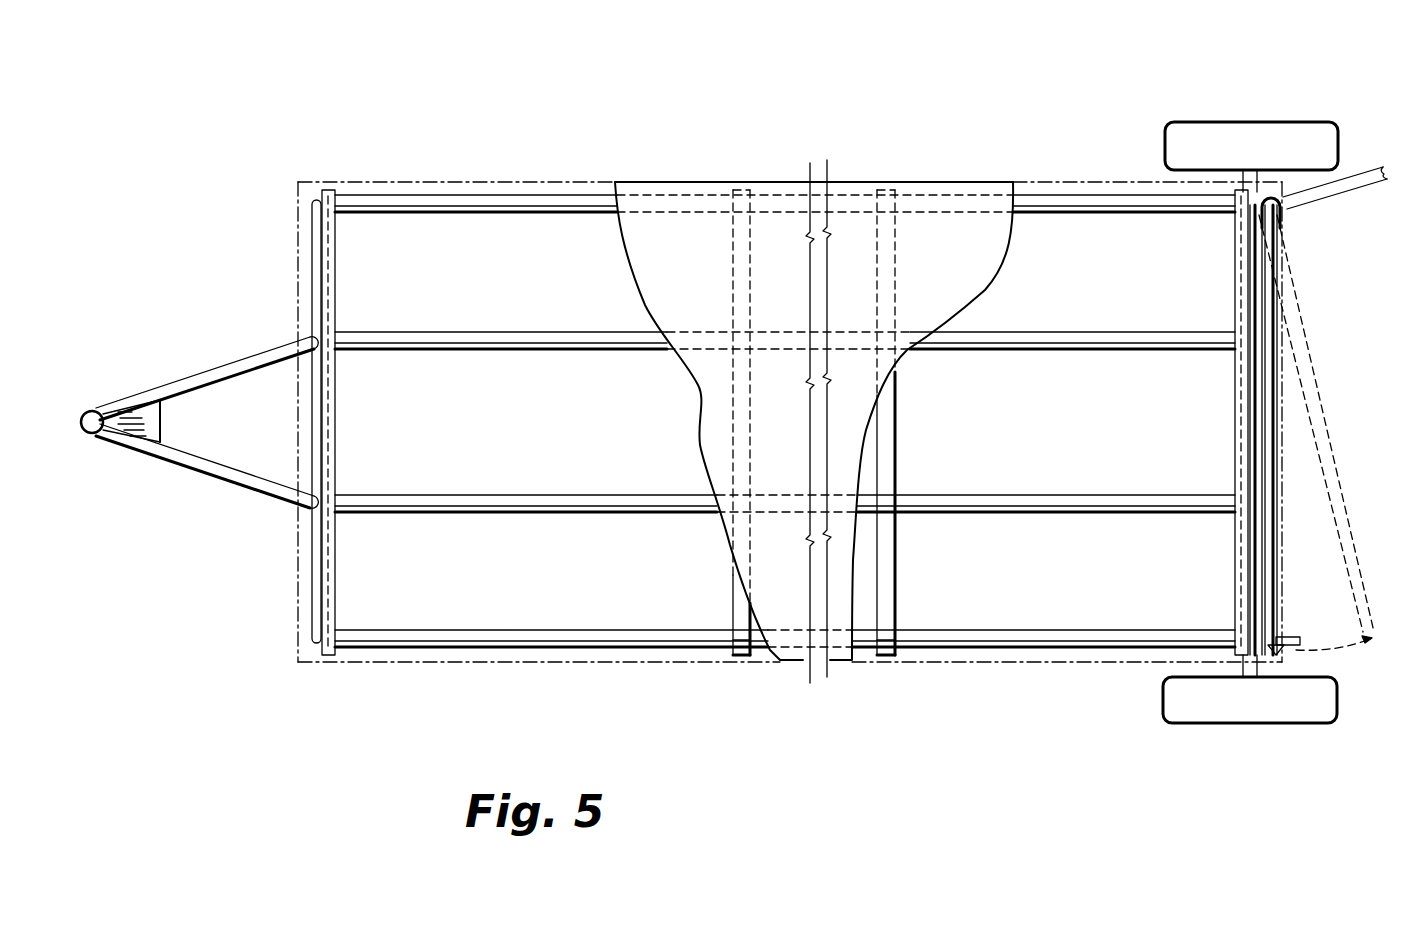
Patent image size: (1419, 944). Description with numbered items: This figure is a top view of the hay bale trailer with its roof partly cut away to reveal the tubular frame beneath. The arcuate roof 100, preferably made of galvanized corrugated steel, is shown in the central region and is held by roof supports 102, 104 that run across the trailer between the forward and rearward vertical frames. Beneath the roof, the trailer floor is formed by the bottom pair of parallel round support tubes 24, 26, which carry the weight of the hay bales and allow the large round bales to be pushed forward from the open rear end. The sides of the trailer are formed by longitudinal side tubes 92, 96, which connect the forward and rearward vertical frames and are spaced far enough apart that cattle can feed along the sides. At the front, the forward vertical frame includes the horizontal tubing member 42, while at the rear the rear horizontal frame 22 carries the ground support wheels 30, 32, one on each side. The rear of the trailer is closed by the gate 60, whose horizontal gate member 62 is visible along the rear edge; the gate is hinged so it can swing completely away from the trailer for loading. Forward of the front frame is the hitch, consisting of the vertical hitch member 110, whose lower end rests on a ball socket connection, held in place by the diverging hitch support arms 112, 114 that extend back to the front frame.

The rear horizontal frame 22 is at (1240, 458).
The bottom support tube 24 is at (540, 503).
The bottom support tube 26 is at (512, 337).
The ground support wheel 30 is at (1182, 714).
The ground support wheel 32 is at (1203, 140).
The horizontal tubing member 42 is at (328, 436).
The gate 60 is at (1325, 312).
The horizontal gate member 62 is at (1268, 418).
The longitudinal side tube 92 is at (437, 635).
The longitudinal side tube 96 is at (500, 205).
The arcuate roof 100 is at (964, 272).
The roof support 102 is at (888, 600).
The roof support 104 is at (740, 612).
The vertical hitch member 110 is at (90, 409).
The hitch support arm 112 is at (214, 463).
The hitch support arm 114 is at (248, 360).